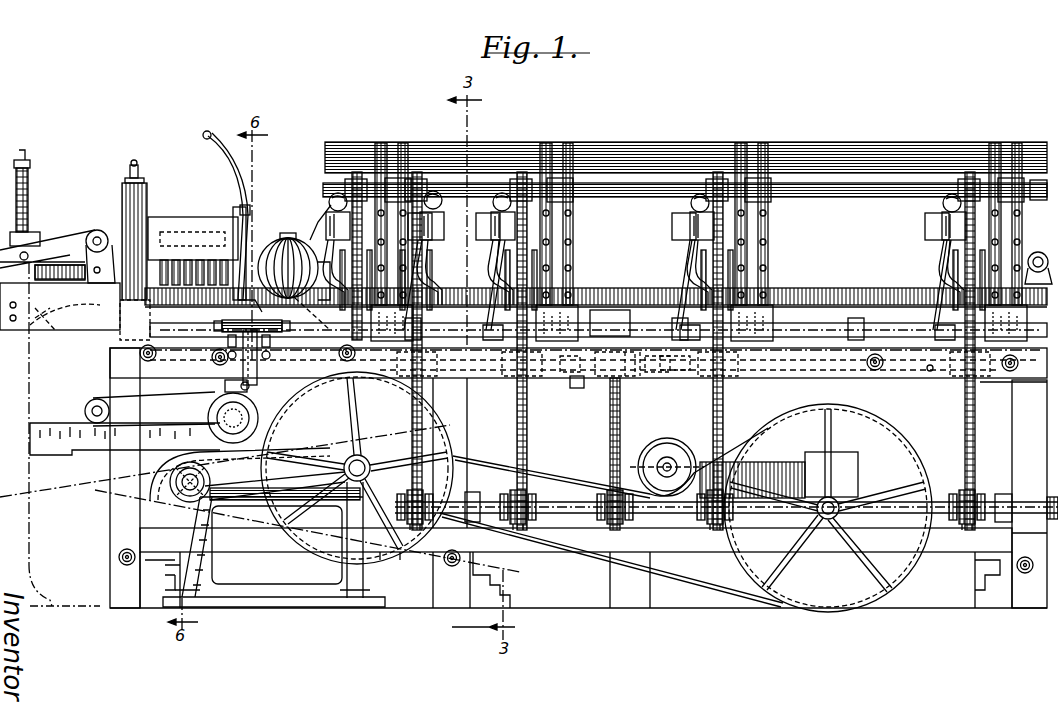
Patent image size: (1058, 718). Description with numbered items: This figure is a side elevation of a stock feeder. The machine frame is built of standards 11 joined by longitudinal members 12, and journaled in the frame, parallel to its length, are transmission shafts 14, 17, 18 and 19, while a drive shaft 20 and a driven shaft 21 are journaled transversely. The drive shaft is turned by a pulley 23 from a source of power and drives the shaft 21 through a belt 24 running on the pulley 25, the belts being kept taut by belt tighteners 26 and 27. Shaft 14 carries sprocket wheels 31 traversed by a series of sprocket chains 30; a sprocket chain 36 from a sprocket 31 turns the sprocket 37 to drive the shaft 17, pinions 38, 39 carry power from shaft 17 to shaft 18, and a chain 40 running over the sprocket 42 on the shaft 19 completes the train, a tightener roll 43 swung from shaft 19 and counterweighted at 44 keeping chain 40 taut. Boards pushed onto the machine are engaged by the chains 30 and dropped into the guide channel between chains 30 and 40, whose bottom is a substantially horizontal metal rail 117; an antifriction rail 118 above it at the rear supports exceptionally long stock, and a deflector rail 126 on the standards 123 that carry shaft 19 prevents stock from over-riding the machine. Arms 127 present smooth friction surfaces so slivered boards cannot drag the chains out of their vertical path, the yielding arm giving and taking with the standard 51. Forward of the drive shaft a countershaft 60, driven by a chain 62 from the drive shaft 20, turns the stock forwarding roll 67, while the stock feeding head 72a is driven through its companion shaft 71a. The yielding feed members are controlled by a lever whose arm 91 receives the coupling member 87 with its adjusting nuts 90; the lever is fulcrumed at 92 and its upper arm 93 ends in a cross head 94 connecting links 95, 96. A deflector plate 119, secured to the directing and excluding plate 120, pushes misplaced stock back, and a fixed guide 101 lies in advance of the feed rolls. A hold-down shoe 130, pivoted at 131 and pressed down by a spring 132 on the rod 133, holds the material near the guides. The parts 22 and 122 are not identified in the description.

The standards 11 is at (118, 532).
The longitudinal members 12 is at (918, 378).
The transmission shaft 14 is at (546, 503).
The transmission shaft 17 is at (672, 378).
The transmission shaft 18 is at (868, 337).
The transmission shaft 19 is at (857, 197).
The drive shaft 20 is at (340, 475).
The driven shaft 21 is at (828, 520).
The bed 22 is at (90, 505).
The pulley 23 is at (322, 553).
The belt 24 is at (695, 575).
The pulley 25 is at (738, 565).
The belt tightener 26 is at (255, 420).
The belt tightener 27 is at (670, 438).
The sprocket chains 30 is at (527, 457).
The sprocket wheels 31 is at (528, 470).
The sprocket chain 36 is at (610, 470).
The sprocket 37 is at (628, 378).
The pinion 38 is at (576, 388).
The pinion 39 is at (606, 295).
The chain 40 is at (357, 175).
The sprocket 42 is at (383, 180).
The tightener roll 43 is at (335, 200).
The counterweight 44 is at (338, 193).
The standard 51 is at (495, 276).
The countershaft 60 is at (170, 488).
The chain 62 is at (228, 502).
The stock forwarding roll 67 is at (178, 258).
The companion shaft 71a is at (290, 238).
The stock feeding head 72a is at (322, 260).
The coupling member 87 is at (225, 386).
The adjusting nuts 90 is at (208, 393).
The lever arm 91 is at (272, 347).
The fulcrum 92 is at (228, 343).
The upper lever arm 93 is at (252, 335).
The cross head 94 is at (246, 332).
The link 95 is at (222, 323).
The link 96 is at (290, 325).
The fixed guide 101 is at (55, 330).
The metal rail 117 is at (585, 288).
The antifriction rail 118 is at (1036, 252).
The deflector plate 119 is at (222, 148).
The directing and excluding plate 120 is at (185, 217).
The link 122 is at (242, 262).
The standards 123 is at (432, 236).
The deflector rail 126 is at (693, 143).
The arm 127 is at (432, 262).
The hold-down shoe 130 is at (45, 244).
The pivot 131 is at (97, 230).
The spring 132 is at (30, 200).
The rod 133 is at (24, 163).